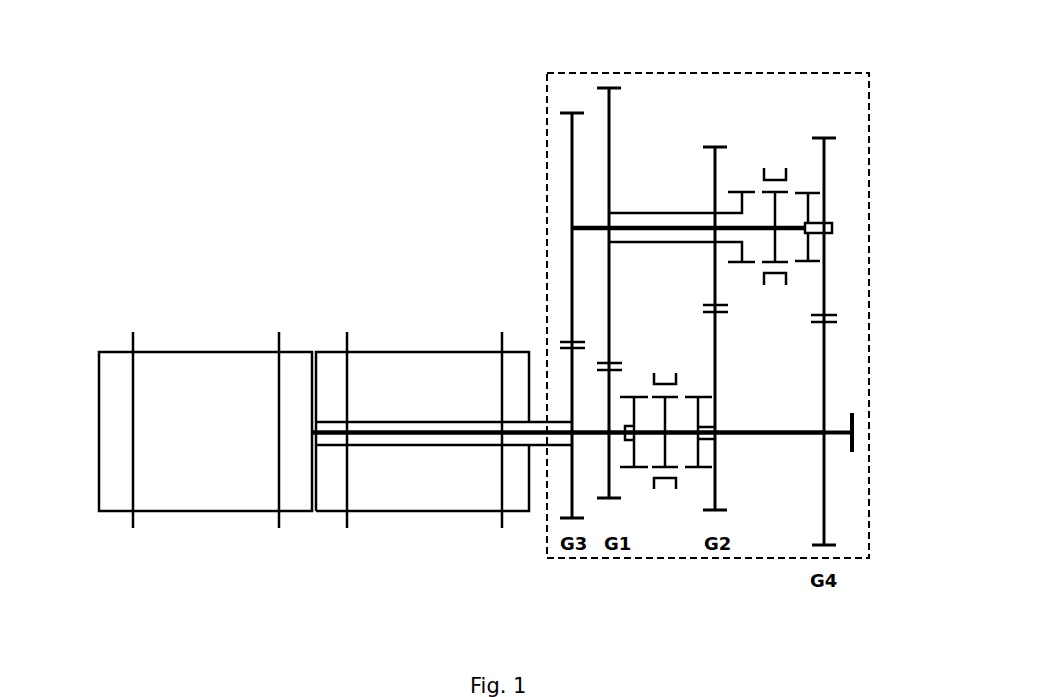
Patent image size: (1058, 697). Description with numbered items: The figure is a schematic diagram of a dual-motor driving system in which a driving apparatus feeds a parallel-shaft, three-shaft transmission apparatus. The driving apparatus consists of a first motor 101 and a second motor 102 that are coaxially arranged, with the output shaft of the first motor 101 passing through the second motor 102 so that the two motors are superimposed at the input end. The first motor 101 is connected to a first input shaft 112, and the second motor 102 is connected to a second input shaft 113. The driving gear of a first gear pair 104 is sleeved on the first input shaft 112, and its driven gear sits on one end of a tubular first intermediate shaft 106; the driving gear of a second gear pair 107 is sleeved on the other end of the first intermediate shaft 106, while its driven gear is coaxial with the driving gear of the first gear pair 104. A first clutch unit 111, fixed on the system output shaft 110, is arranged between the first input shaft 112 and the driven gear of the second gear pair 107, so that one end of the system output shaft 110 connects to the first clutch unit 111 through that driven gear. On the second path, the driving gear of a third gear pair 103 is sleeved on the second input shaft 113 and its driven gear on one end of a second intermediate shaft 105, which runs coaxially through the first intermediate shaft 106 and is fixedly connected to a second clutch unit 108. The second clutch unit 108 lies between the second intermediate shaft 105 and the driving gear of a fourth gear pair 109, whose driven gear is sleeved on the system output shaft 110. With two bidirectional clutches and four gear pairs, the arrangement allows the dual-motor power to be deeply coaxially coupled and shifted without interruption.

The first motor 101 is at (164, 380).
The second motor 102 is at (383, 380).
The third gear pair 103 is at (572, 340).
The first gear pair 104 is at (610, 363).
The second intermediate shaft 105 is at (600, 227).
The first intermediate shaft 106 is at (665, 213).
The second gear pair 107 is at (715, 305).
The second clutch unit 108 is at (773, 228).
The fourth gear pair 109 is at (824, 313).
The system output shaft 110 is at (833, 433).
The first clutch unit 111 is at (665, 433).
The first input shaft 112 is at (600, 433).
The second input shaft 113 is at (547, 444).